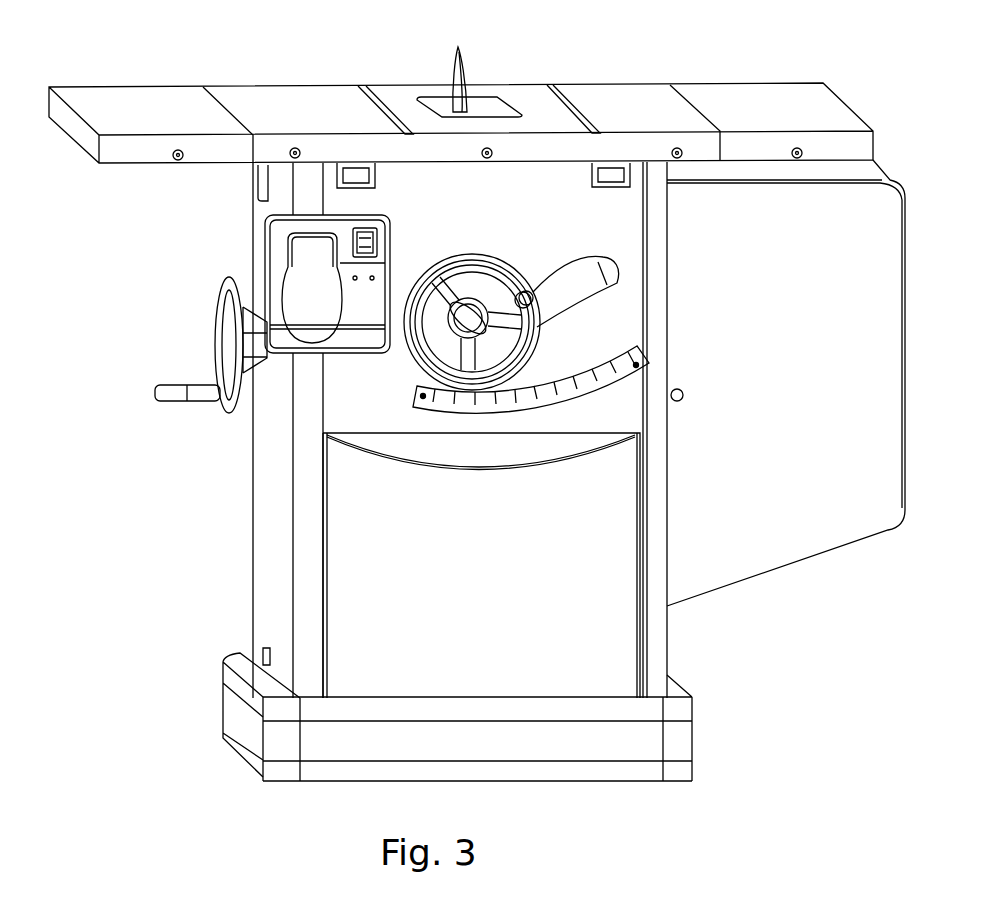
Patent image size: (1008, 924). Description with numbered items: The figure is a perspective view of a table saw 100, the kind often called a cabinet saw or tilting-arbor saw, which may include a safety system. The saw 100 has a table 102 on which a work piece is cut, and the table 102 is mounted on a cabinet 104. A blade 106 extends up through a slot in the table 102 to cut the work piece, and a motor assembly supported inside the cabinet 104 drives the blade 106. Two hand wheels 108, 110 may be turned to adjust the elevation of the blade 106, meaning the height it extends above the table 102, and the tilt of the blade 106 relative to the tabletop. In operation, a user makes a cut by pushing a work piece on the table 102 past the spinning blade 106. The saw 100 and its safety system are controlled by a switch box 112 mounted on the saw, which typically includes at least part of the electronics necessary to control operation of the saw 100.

The table saw 100 is at (703, 650).
The table 102 is at (278, 110).
The cabinet 104 is at (380, 617).
The blade 106 is at (473, 67).
The hand wheel 108 is at (517, 270).
The hand wheel 110 is at (217, 312).
The switch box 112 is at (360, 340).